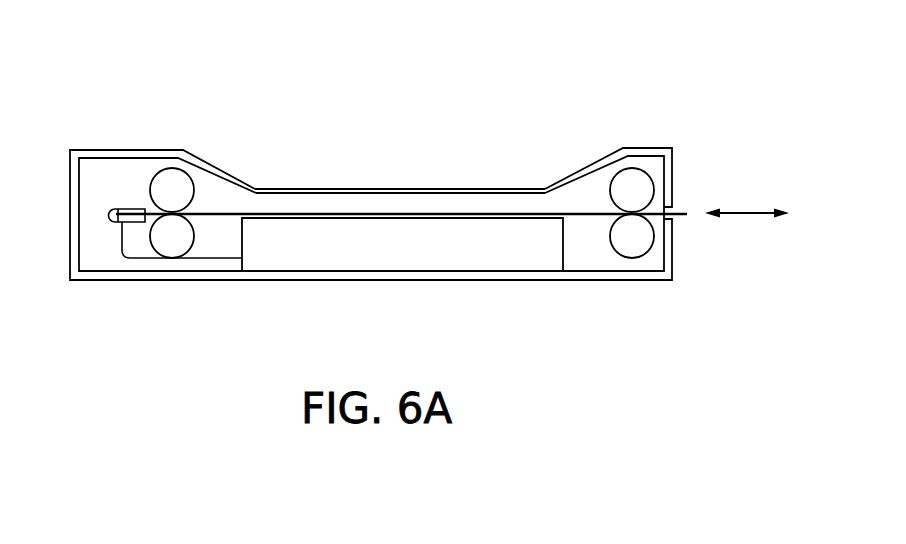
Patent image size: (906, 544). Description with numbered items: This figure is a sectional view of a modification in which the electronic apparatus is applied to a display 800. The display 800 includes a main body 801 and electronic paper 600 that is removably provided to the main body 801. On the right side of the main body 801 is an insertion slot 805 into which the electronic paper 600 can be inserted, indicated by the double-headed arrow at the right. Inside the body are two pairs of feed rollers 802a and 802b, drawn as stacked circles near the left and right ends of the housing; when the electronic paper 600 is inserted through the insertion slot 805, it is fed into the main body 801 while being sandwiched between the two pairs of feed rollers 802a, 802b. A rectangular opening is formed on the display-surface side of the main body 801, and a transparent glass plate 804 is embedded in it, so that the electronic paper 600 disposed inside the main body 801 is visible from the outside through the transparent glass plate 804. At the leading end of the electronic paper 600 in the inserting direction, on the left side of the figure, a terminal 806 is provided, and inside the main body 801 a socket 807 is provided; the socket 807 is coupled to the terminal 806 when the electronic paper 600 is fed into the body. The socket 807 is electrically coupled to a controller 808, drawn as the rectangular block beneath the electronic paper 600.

The display 800 is at (681, 80).
The main body 801 is at (134, 150).
The feed rollers 802a is at (191, 168).
The feed rollers 802b is at (628, 157).
The transparent glass plate 804 is at (453, 187).
The insertion slot 805 is at (678, 210).
The terminal 806 is at (110, 208).
The socket 807 is at (108, 223).
The controller 808 is at (365, 262).
The electronic paper 600 is at (387, 204).